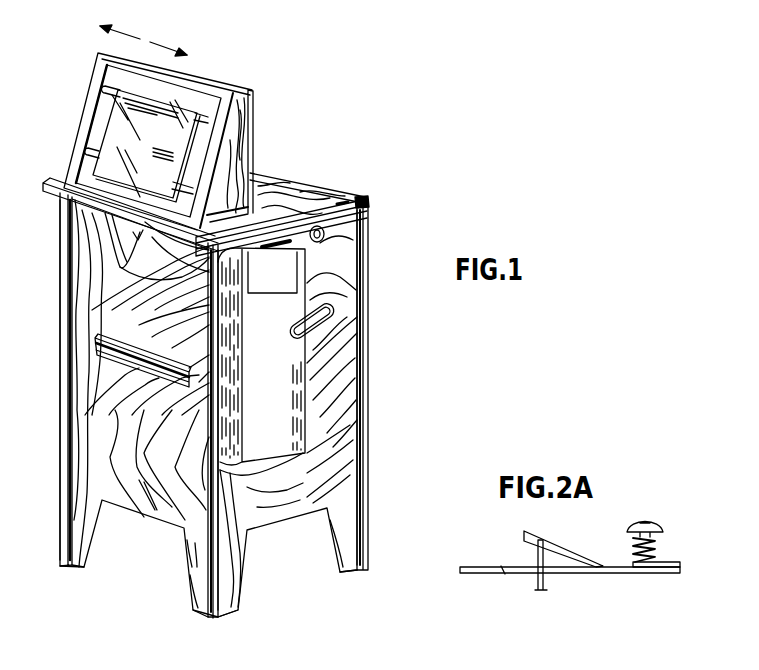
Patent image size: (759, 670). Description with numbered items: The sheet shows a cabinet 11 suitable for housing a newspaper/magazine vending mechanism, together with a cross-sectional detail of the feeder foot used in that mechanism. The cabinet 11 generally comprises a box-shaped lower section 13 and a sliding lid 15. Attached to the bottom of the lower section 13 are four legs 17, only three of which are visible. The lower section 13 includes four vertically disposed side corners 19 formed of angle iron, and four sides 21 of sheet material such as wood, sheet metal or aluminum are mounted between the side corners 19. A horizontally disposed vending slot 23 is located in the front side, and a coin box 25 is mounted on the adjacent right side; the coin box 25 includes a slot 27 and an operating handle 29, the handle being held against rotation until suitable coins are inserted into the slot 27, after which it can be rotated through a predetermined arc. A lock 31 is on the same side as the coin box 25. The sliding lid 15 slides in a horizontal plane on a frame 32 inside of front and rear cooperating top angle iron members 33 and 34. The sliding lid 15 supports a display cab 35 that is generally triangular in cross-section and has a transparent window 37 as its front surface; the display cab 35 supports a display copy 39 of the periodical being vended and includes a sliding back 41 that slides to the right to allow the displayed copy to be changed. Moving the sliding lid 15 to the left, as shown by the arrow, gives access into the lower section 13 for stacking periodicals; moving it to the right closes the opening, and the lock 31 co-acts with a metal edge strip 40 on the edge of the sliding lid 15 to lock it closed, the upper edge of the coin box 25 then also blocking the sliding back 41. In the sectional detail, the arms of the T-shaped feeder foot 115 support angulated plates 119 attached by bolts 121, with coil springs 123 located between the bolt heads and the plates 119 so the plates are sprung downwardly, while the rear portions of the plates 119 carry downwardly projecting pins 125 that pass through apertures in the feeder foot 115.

In FIG. 1, the cabinet 11 is at (372, 238).
In FIG. 1, the lower section 13 is at (348, 418).
In FIG. 1, the sliding lid 15 is at (270, 180).
In FIG. 1, the legs 17 is at (78, 553).
In FIG. 1, the side corners 19 is at (66, 302).
In FIG. 1, the sides 21 is at (122, 498).
In FIG. 1, the vending slot 23 is at (113, 347).
In FIG. 1, the coin box 25 is at (228, 400).
In FIG. 1, the slot 27 is at (250, 271).
In FIG. 1, the operating handle 29 is at (303, 313).
In FIG. 1, the lock 31 is at (325, 234).
In FIG. 1, the frame 32 is at (369, 202).
In FIG. 1, the front top angle iron member 33 is at (80, 200).
In FIG. 1, the rear top angle iron member 34 is at (358, 197).
In FIG. 1, the display cab 35 is at (252, 90).
In FIG. 1, the transparent window 37 is at (102, 127).
In FIG. 1, the display copy 39 is at (118, 104).
In FIG. 1, the metal edge strip 40 is at (317, 196).
In FIG. 1, the sliding back 41 is at (253, 136).
In FIG. 2A, the T-shaped feeder foot 115 is at (662, 573).
In FIG. 2A, the angulated plates 119 is at (672, 560).
In FIG. 2A, the bolts 121 is at (656, 526).
In FIG. 2A, the coil springs 123 is at (656, 540).
In FIG. 2A, the pins 125 is at (544, 578).